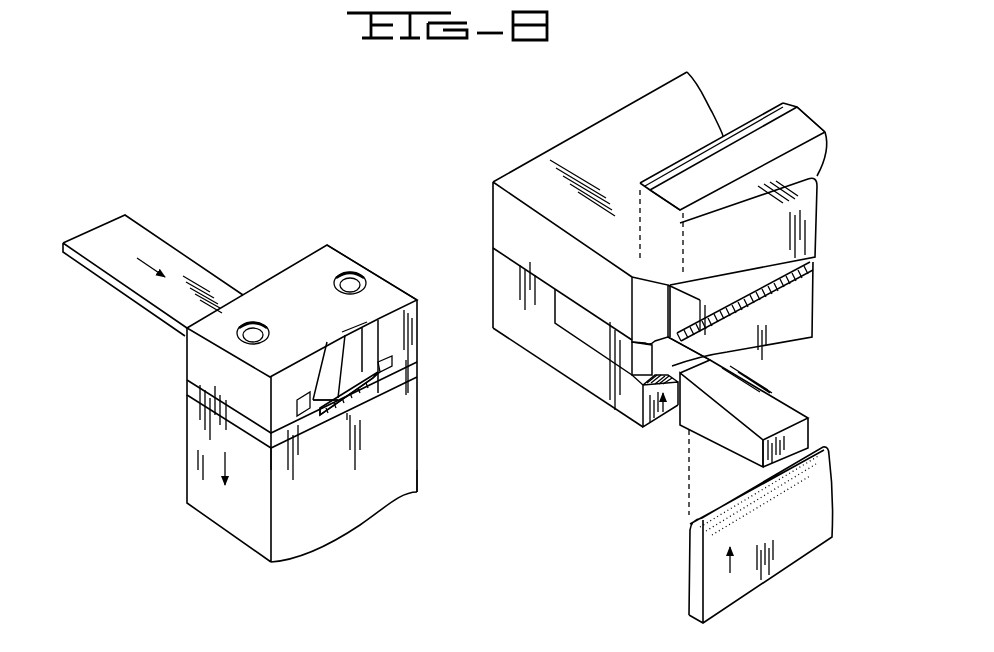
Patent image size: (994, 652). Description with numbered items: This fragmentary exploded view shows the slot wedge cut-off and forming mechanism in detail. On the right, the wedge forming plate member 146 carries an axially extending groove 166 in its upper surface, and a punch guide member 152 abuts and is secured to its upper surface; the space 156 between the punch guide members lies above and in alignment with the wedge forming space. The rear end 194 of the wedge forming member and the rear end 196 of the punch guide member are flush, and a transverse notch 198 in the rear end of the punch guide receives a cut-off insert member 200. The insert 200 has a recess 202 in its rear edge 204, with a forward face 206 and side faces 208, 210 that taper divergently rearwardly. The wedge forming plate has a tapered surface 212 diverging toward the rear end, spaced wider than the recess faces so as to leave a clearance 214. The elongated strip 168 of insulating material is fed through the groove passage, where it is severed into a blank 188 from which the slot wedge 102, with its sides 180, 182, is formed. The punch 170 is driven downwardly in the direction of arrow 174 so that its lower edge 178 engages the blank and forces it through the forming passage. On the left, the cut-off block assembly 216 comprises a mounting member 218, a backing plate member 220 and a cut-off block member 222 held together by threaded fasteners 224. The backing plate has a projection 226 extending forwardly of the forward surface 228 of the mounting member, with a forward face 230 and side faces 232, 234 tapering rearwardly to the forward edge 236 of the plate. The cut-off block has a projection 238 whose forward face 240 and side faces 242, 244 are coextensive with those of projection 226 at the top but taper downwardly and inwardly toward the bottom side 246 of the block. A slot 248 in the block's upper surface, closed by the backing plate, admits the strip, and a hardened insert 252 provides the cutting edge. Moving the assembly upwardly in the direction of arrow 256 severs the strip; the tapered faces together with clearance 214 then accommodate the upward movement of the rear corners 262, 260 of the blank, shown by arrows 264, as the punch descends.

The slot wedge 102 is at (797, 120).
The wedge forming plate member 146 is at (573, 145).
The punch guide member 152 is at (507, 285).
The space between punch guide members 156 is at (818, 312).
The groove 166 is at (813, 260).
The elongated strip 168 is at (130, 228).
The punch member 170 is at (720, 603).
The arrow 174 is at (732, 547).
The lower edge of punch 178 is at (697, 515).
The side of slot wedge 180 is at (803, 148).
The side of slot wedge 182 is at (718, 143).
The blank 188 is at (735, 120).
The rear end of wedge forming member 194 is at (500, 208).
The rear end of punch guide member 196 is at (517, 337).
The transverse notch 198 is at (645, 382).
The cut-off insert member 200 is at (787, 410).
The recess 202 is at (658, 420).
The rear edge of cut-off insert member 204 is at (740, 447).
The forward face of recess 206 is at (703, 352).
The side face of recess 208 is at (630, 362).
The side face of recess 210 is at (712, 355).
The tapered surface 212 is at (641, 283).
The clearance 214 is at (640, 340).
The cut-off block assembly 216 is at (166, 433).
The mounting member 218 is at (190, 492).
The backing plate member 220 is at (187, 380).
The cut-off block member 222 is at (337, 252).
The threaded fasteners 224 is at (352, 275).
The projection of backing plate 226 is at (369, 420).
The forward surface of mounting member 228 is at (403, 490).
The forward face of projection 230 is at (347, 413).
The side face of projection 232 is at (323, 420).
The side face of projection 234 is at (393, 393).
The forward edge of backing plate 236 is at (280, 437).
The projection of cut-off block 238 is at (392, 340).
The forward face of cut-off block projection 240 is at (353, 353).
The side face of cut-off block projection 242 is at (335, 342).
The side face of cut-off block projection 244 is at (355, 335).
The bottom side of cut-off block 246 is at (280, 278).
The slot 248 is at (365, 412).
The hardened insert 252 is at (304, 414).
The arrow 256 is at (217, 470).
The rear corner of blank 260 is at (707, 244).
The rear corner of blank 262 is at (637, 190).
The arrows 264 is at (680, 215).